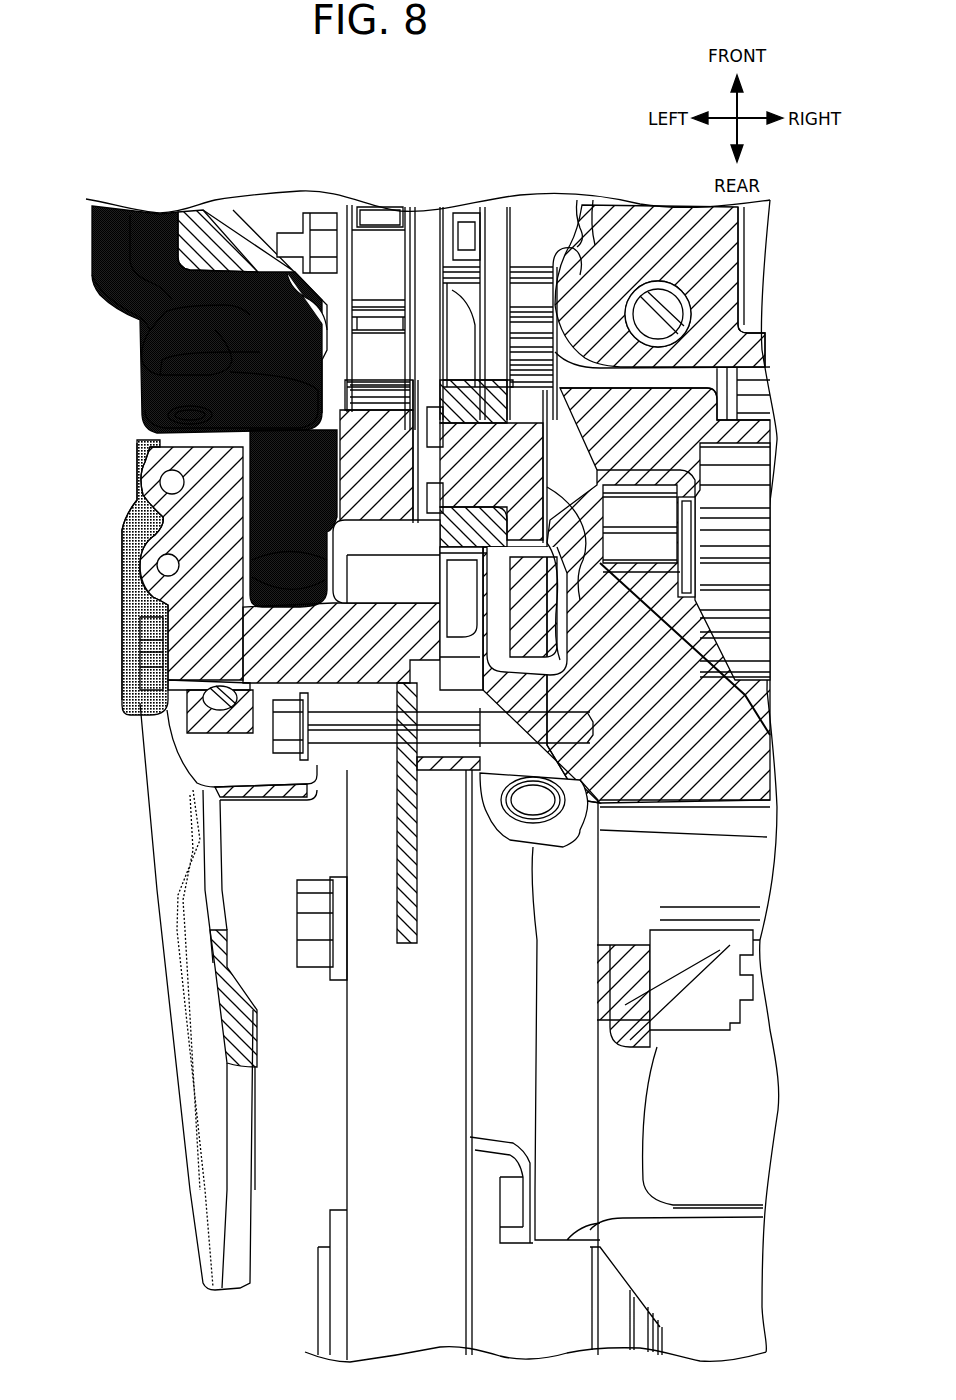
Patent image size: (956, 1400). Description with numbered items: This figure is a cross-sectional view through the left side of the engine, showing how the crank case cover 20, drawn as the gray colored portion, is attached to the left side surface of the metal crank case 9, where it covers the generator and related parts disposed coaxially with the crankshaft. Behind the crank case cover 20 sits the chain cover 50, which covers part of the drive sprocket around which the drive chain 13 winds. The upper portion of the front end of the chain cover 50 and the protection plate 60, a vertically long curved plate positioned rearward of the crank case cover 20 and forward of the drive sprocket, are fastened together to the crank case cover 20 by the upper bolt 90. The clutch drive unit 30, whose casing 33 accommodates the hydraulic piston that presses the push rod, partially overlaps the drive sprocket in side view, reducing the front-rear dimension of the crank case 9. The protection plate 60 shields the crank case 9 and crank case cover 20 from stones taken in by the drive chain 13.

The crank case 9 is at (393, 242).
The crank case cover 20 is at (157, 381).
The clutch drive unit 30 is at (122, 567).
The casing 33 is at (137, 603).
The upper bolt 90 is at (205, 703).
The chain cover 50 is at (173, 840).
The protection plate 60 is at (397, 903).
The drive chain 13 is at (393, 1158).